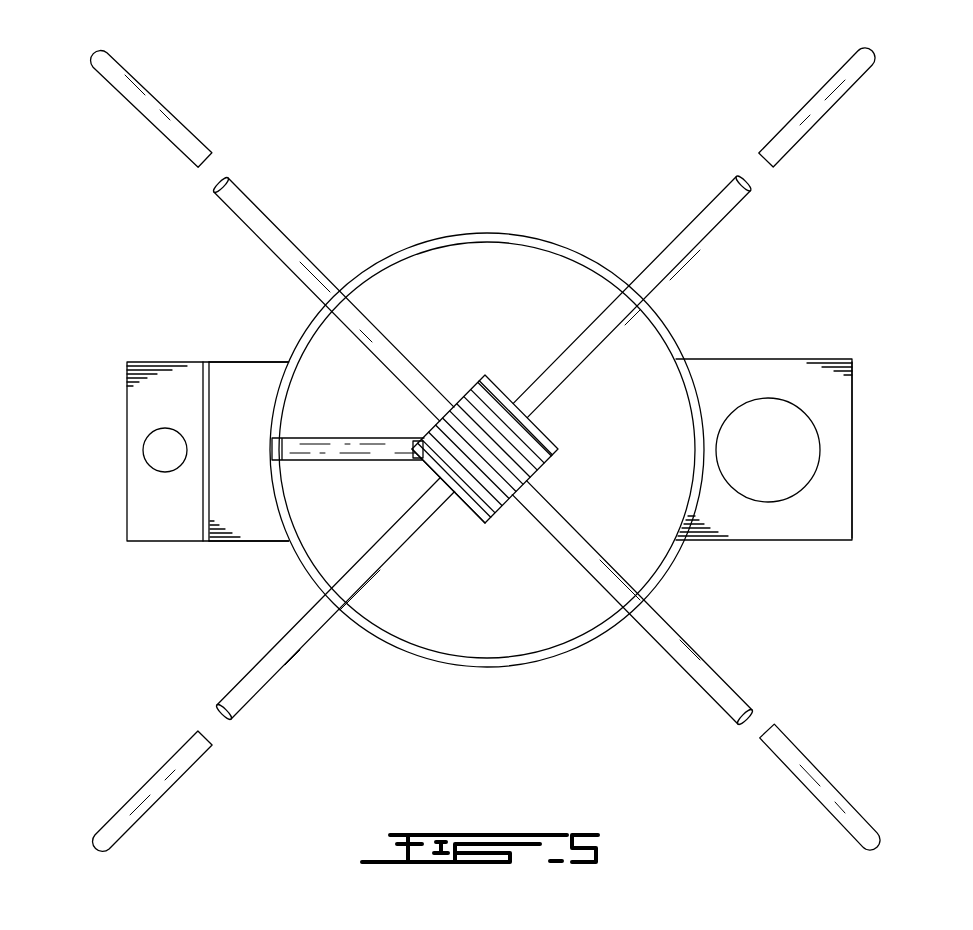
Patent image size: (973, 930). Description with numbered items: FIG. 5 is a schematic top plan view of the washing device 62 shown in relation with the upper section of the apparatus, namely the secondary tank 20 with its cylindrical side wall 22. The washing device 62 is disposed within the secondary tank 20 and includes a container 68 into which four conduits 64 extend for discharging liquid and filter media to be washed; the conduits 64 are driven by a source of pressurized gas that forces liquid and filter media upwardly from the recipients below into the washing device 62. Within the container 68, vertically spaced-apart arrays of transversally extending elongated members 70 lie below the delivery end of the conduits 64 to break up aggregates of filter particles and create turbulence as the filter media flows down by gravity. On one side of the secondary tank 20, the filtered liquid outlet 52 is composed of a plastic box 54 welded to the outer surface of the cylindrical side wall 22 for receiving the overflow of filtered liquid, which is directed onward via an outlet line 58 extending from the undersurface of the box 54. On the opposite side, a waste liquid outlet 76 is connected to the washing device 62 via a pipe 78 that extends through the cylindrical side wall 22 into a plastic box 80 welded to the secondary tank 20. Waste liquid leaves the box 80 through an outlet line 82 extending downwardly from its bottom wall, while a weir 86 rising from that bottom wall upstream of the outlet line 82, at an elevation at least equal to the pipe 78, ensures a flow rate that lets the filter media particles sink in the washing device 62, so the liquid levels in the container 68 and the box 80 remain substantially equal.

The secondary tank 20 is at (448, 228).
The cylindrical side wall 22 is at (517, 240).
The filtered liquid outlet 52 is at (805, 348).
The plastic box 54 is at (853, 380).
The outlet line 58 is at (812, 482).
The washing device 62 is at (557, 421).
The conduits 64 is at (150, 74).
The container 68 is at (503, 510).
The elongated members 70 is at (490, 375).
The waste liquid outlet 76 is at (161, 352).
The pipe 78 is at (342, 461).
The plastic box 80 is at (249, 366).
The outlet line 82 is at (160, 472).
The weir 86 is at (210, 475).